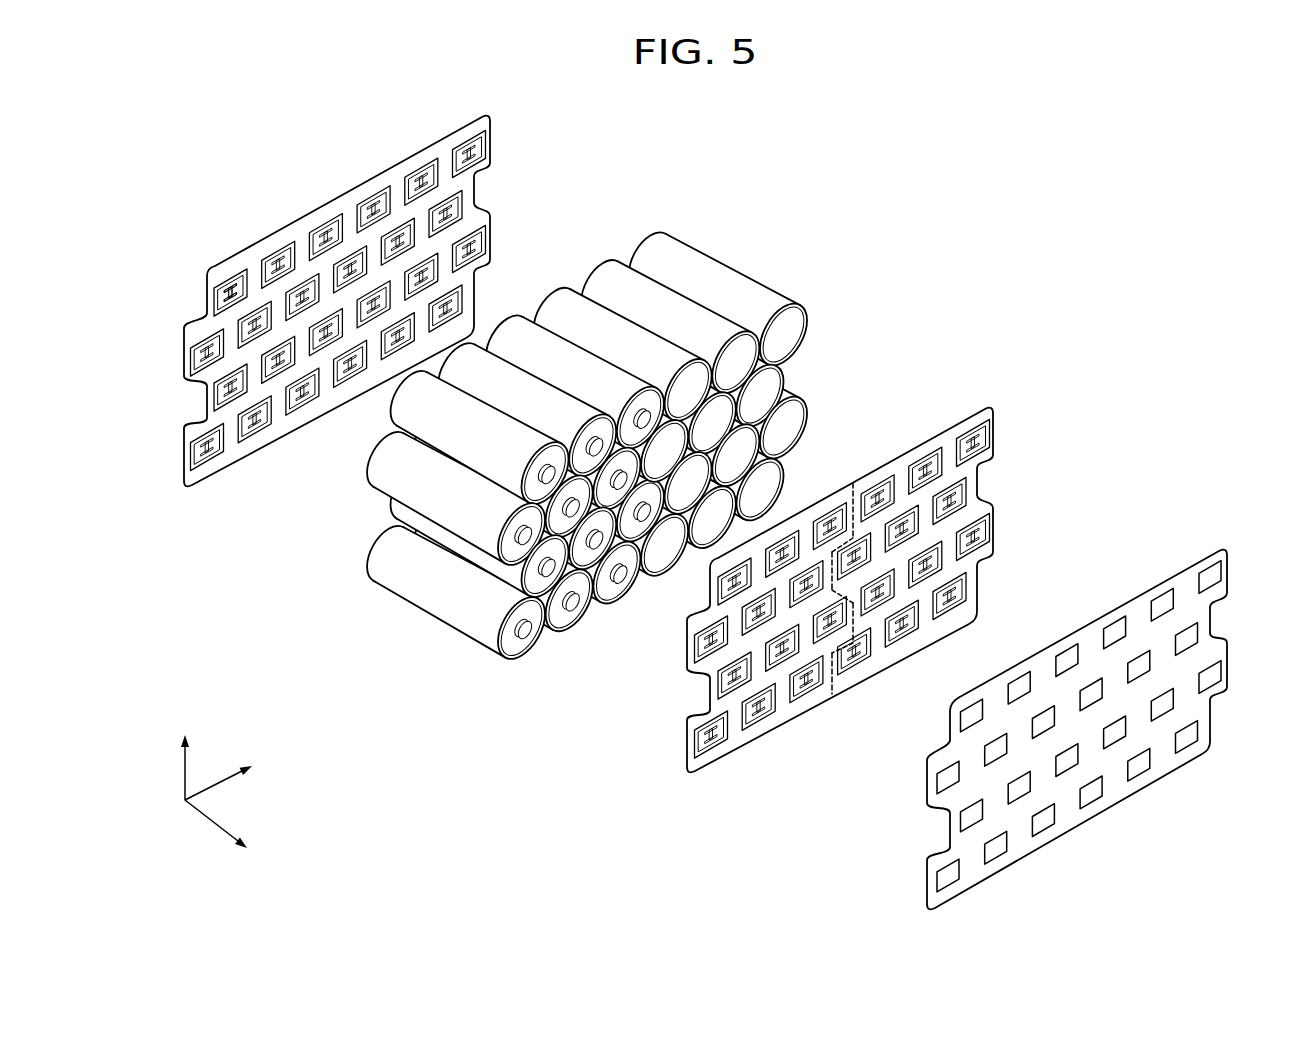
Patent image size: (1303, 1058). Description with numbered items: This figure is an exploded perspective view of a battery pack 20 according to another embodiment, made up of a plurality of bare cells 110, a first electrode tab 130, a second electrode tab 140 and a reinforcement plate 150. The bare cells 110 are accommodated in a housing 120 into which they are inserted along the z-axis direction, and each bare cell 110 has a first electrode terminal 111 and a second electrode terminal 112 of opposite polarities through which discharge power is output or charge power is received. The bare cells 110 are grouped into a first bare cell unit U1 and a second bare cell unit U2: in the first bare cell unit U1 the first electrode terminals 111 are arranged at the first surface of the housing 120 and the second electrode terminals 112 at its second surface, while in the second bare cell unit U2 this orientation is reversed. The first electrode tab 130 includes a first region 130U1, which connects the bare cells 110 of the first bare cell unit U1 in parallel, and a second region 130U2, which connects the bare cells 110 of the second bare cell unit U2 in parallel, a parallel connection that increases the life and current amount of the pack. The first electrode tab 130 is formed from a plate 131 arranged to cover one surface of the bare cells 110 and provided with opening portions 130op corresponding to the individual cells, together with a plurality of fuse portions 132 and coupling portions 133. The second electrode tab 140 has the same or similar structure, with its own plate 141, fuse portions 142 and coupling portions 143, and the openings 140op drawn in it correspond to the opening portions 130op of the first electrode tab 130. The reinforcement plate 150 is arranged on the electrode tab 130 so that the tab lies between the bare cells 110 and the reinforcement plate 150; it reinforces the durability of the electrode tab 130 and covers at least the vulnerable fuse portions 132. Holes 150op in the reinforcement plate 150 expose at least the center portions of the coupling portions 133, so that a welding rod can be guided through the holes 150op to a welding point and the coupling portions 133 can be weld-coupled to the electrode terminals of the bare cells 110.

The battery pack 20 is at (1136, 127).
The bare cell 110 is at (510, 650).
The first electrode terminal 111 is at (617, 580).
The second electrode terminal 112 is at (665, 548).
The housing 120 is at (740, 277).
The first electrode tab 130 is at (897, 582).
The first region 130U1 is at (803, 517).
The second region 130U2 is at (959, 553).
The opening portion 130op is at (958, 592).
The plate 131 is at (836, 694).
The fuse portion 132 is at (846, 652).
The coupling portion 133 is at (863, 654).
The second electrode tab 140 is at (346, 292).
The opening of second bus bar 140op is at (200, 348).
The plate 141 is at (283, 244).
The fuse portion 142 is at (217, 308).
The coupling portion 143 is at (230, 288).
The reinforcement plate 150 is at (1088, 730).
The hole 150op is at (1140, 767).
The first bare cell unit U1 is at (493, 525).
The second bare cell unit U2 is at (762, 468).